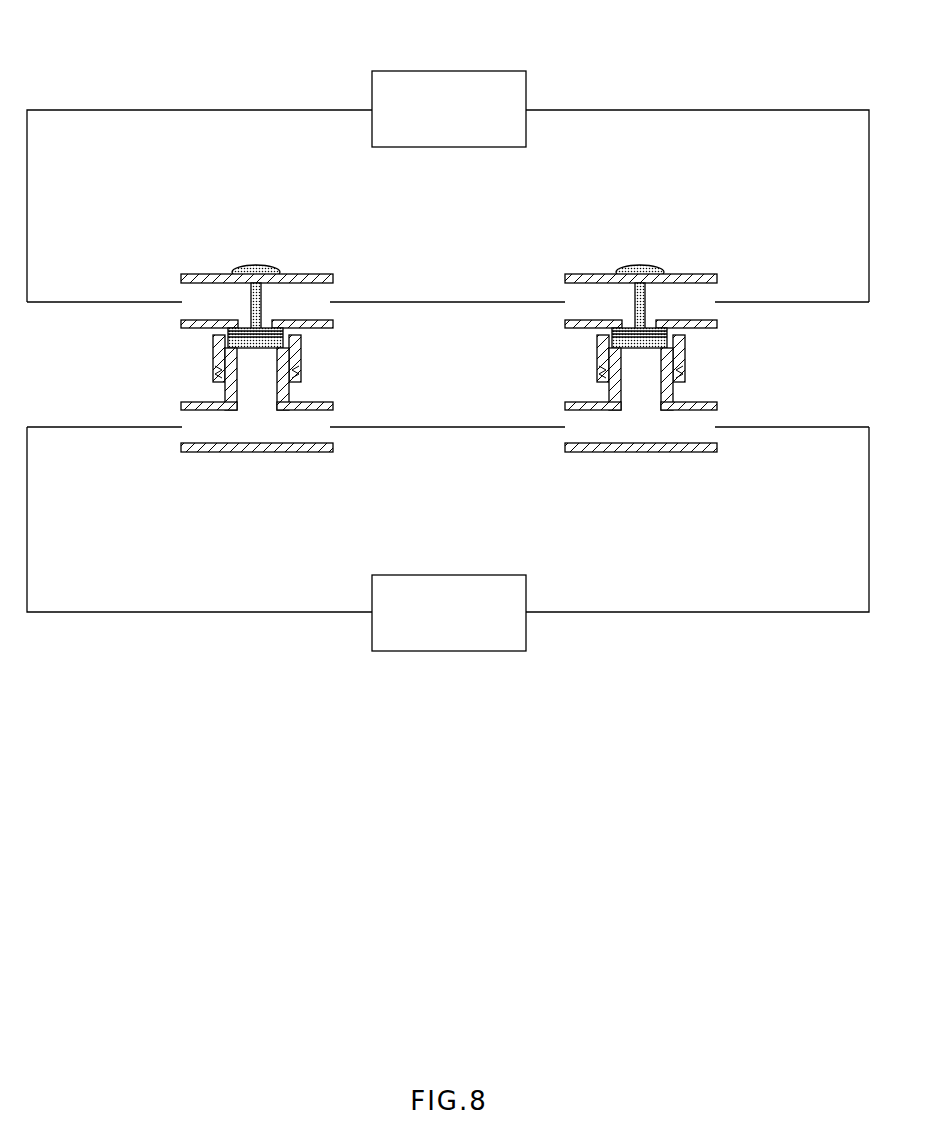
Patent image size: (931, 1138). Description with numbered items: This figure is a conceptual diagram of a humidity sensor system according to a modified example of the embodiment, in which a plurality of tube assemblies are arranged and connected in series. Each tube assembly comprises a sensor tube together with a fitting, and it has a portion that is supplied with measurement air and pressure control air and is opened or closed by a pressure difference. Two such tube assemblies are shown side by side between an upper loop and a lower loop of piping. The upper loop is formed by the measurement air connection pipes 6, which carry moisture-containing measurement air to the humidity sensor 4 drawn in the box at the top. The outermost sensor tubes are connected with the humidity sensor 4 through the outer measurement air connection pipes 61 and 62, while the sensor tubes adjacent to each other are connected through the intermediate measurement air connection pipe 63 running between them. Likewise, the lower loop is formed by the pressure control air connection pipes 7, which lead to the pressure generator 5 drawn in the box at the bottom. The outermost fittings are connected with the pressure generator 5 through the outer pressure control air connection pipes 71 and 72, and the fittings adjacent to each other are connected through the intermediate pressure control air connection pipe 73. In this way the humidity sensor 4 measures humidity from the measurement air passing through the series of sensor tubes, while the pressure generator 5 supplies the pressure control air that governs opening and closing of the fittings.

The humidity sensor 4 is at (448, 70).
The pressure generator 5 is at (448, 653).
The measurement air connection pipes 6 is at (808, 92).
The outer measurement air connection pipe 61 is at (85, 304).
The outer measurement air connection pipe 62 is at (831, 304).
The intermediate measurement air connection pipe 63 is at (446, 304).
The pressure control air connection pipes 7 is at (808, 640).
The outer pressure control air connection pipe 71 is at (48, 426).
The outer pressure control air connection pipe 72 is at (794, 426).
The intermediate pressure control air connection pipe 73 is at (408, 426).